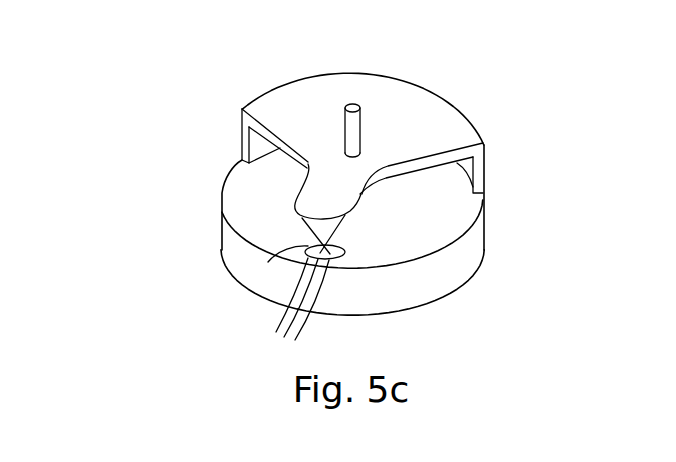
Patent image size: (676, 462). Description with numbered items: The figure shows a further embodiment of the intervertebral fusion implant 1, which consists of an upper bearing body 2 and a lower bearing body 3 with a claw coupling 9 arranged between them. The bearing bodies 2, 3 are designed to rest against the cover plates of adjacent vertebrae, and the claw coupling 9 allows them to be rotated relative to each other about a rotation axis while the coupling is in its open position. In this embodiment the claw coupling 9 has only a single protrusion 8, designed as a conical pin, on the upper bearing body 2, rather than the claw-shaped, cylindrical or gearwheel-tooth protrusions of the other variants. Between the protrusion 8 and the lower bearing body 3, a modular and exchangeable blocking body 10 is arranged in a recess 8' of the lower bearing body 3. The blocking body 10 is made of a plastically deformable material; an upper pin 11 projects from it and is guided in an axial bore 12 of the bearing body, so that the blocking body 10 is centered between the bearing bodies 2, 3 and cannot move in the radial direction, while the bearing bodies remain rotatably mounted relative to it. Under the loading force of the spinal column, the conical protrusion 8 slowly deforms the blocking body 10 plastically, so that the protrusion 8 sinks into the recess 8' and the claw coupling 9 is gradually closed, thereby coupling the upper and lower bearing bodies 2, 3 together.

The intervertebral fusion implant 1 is at (188, 237).
The upper bearing body 2 is at (447, 124).
The lower bearing body 3 is at (473, 247).
The protrusion 8 is at (259, 215).
The recess 8' is at (340, 302).
The claw coupling 9 is at (293, 303).
The blocking body 10 is at (268, 262).
The upper pin 11 is at (356, 122).
The axial bore 12 is at (343, 148).